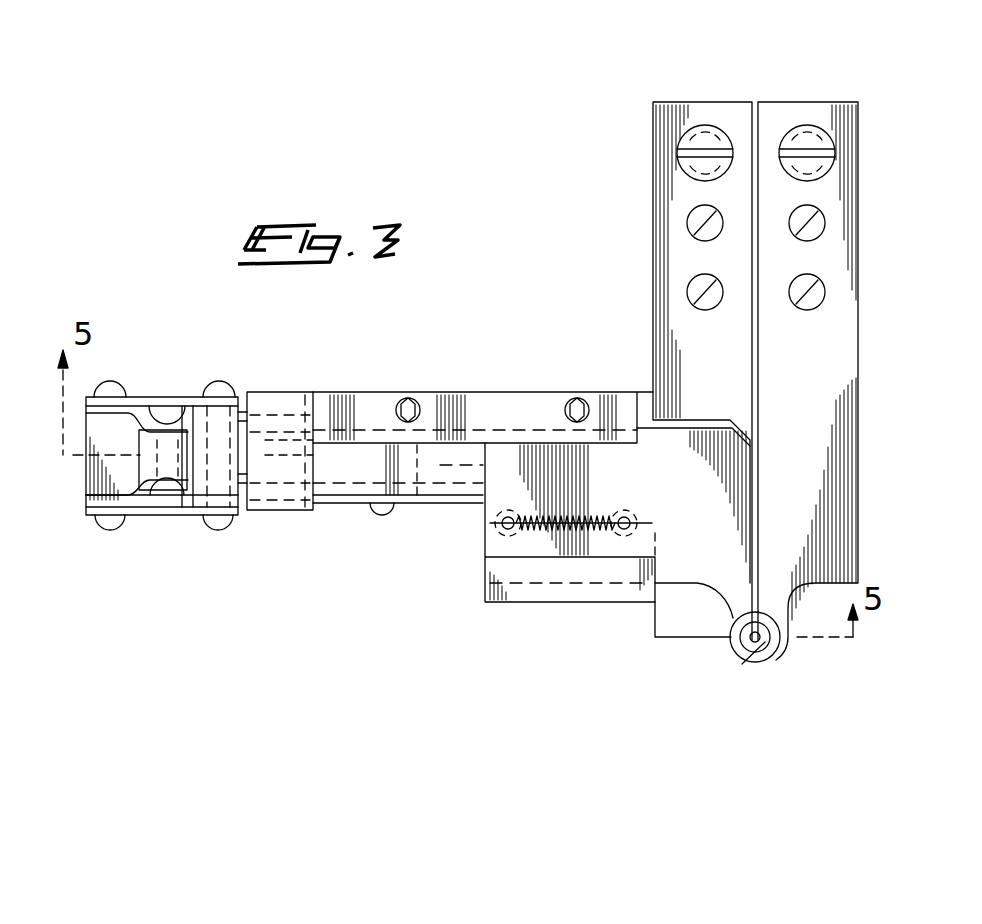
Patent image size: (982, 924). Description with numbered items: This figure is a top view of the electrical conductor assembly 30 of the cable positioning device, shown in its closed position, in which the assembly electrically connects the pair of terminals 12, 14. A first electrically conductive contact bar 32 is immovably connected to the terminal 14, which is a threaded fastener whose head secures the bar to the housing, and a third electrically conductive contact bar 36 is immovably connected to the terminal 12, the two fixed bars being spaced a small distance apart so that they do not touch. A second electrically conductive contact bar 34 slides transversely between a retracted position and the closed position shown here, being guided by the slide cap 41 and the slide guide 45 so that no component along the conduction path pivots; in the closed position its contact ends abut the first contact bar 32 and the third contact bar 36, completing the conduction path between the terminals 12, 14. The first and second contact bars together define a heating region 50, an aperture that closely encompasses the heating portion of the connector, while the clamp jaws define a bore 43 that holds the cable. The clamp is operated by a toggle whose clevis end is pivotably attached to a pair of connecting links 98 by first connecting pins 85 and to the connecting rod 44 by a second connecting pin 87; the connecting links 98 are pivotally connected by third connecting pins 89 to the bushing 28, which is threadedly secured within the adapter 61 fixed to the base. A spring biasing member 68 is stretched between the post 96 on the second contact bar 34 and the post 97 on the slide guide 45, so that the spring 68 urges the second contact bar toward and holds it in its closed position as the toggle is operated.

The terminal 12 is at (703, 140).
The terminal 14 is at (803, 140).
The bushing 28 is at (280, 512).
The electrical conductor assembly 30 is at (624, 238).
The first electrically conductive contact bar 32 is at (778, 380).
The second electrically conductive contact bar 34 is at (703, 592).
The third electrically conductive contact bar 36 is at (668, 326).
The slide cap 41 is at (522, 392).
The bore 43 is at (733, 620).
The connecting rod 44 is at (152, 463).
The slide guide 45 is at (532, 605).
The heating region 50 is at (760, 647).
The adapter 61 is at (303, 510).
The spring biasing member 68 is at (600, 502).
The first connecting pins 85 is at (110, 384).
The second connecting pin 87 is at (165, 406).
The third connecting pins 89 is at (222, 390).
The post 96 is at (497, 527).
The post 97 is at (619, 510).
The connecting links 98 is at (190, 396).